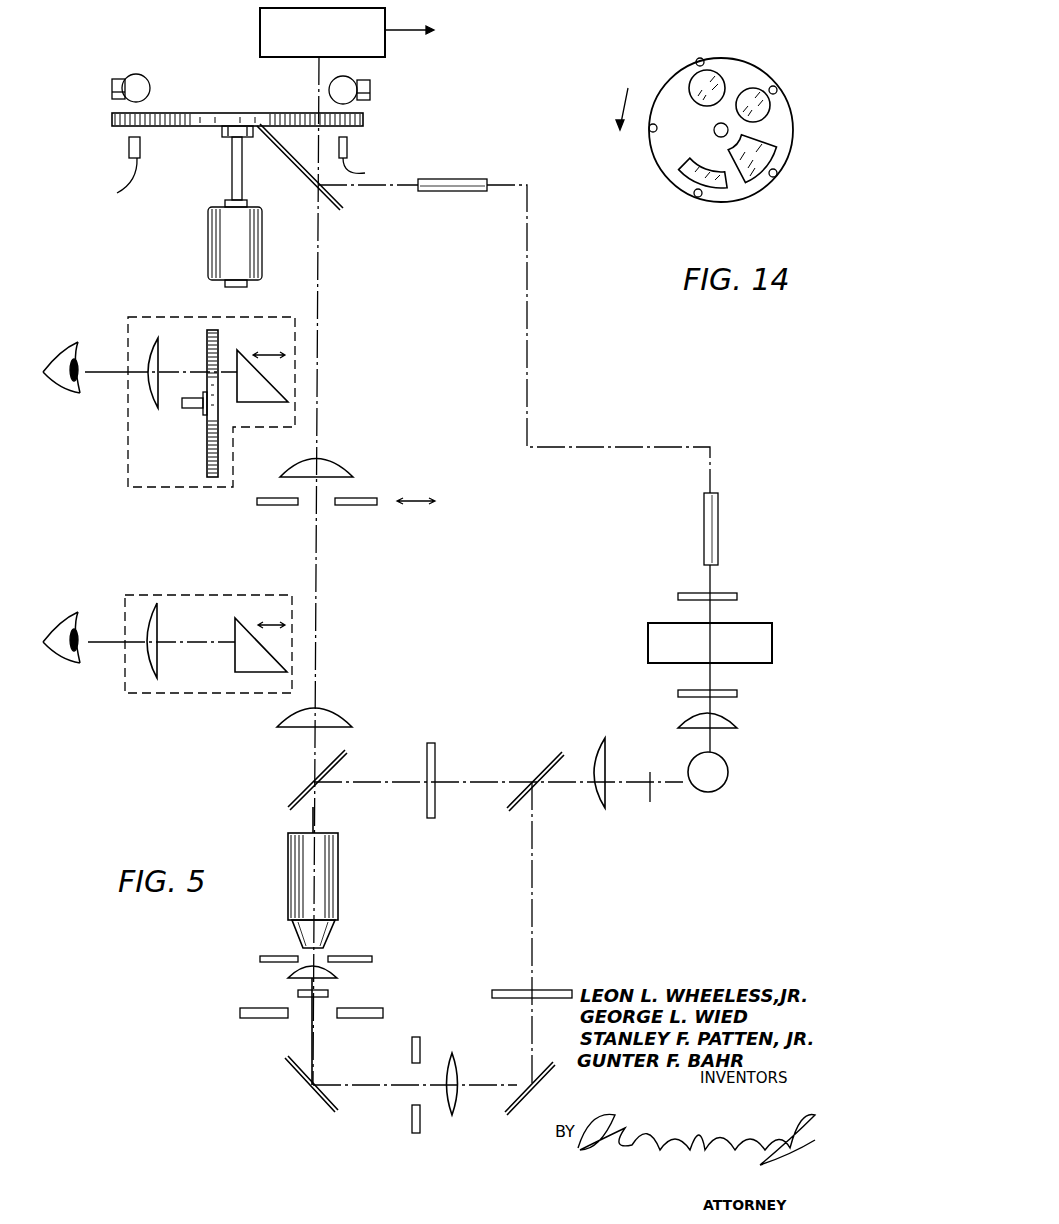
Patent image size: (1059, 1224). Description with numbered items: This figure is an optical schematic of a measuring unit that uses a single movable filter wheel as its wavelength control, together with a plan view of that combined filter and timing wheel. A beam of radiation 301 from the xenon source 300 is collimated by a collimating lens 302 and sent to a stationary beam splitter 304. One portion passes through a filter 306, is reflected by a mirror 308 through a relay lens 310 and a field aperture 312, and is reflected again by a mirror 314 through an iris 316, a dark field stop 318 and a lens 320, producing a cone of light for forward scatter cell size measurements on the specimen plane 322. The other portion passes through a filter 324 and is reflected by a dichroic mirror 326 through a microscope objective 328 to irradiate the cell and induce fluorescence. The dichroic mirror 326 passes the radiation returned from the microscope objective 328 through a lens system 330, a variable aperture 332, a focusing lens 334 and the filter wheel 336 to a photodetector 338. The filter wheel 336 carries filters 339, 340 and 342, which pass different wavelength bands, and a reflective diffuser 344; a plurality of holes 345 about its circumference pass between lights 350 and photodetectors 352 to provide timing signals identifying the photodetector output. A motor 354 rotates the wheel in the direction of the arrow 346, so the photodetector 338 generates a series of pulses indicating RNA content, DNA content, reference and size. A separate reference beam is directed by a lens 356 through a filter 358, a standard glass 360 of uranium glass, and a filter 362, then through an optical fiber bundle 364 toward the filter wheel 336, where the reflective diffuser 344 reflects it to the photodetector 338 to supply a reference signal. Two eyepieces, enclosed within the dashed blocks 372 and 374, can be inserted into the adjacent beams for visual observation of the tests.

In FIG. 5, the xenon source 300 is at (700, 792).
In FIG. 5, the beam of radiation 301 is at (656, 802).
In FIG. 5, the collimating lens 302 is at (590, 800).
In FIG. 5, the stationary beam splitter 304 is at (507, 797).
In FIG. 5, the filter 306 is at (513, 990).
In FIG. 5, the mirror 308 is at (510, 1082).
In FIG. 5, the relay lens 310 is at (452, 1115).
In FIG. 5, the field aperture 312 is at (412, 1122).
In FIG. 5, the mirror 314 is at (313, 1097).
In FIG. 5, the iris 316 is at (370, 1008).
In FIG. 5, the dark field stop 318 is at (298, 993).
In FIG. 5, the lens 320 is at (340, 976).
In FIG. 5, the specimen plane 322 is at (280, 956).
In FIG. 5, the filter 324 is at (435, 750).
In FIG. 5, the dichroic mirror 326 is at (284, 780).
In FIG. 5, the microscope objective 328 is at (338, 885).
In FIG. 5, the lens system 330 is at (332, 708).
In FIG. 5, the variable aperture 332 is at (363, 498).
In FIG. 5, the focusing lens 334 is at (332, 460).
In FIG. 5, the filter wheel 336 is at (172, 113).
In FIG. 5, the photodetector 338 is at (385, 22).
In FIG. 14, the filter 339 is at (697, 170).
In FIG. 14, the filter 340 is at (695, 80).
In FIG. 14, the filter 342 is at (763, 105).
In FIG. 5, the reflective diffuser 344 is at (340, 200).
In FIG. 14, the reflective diffuser 344 is at (757, 163).
In FIG. 14, the holes 345 is at (700, 58).
In FIG. 14, the arrow 346 is at (628, 88).
In FIG. 5, the lights 350 is at (142, 78).
In FIG. 5, the photodetectors 352 is at (129, 148).
In FIG. 5, the motor 354 is at (223, 248).
In FIG. 5, the lens 356 is at (725, 728).
In FIG. 5, the filter 358 is at (678, 695).
In FIG. 5, the standard glass 360 is at (648, 640).
In FIG. 5, the filter 362 is at (678, 596).
In FIG. 5, the optical fiber bundle 364 is at (453, 179).
In FIG. 5, the eyepiece 372 is at (153, 595).
In FIG. 5, the eyepiece 374 is at (169, 308).